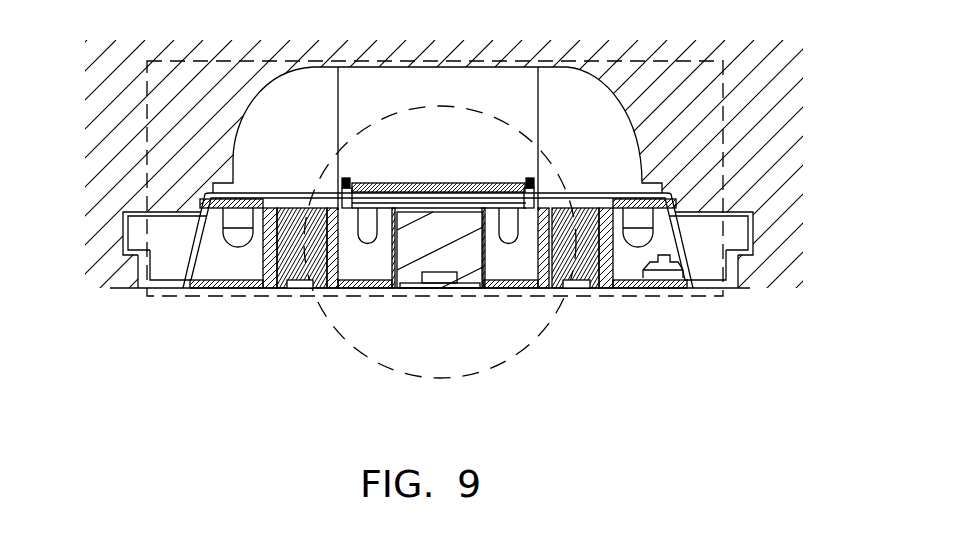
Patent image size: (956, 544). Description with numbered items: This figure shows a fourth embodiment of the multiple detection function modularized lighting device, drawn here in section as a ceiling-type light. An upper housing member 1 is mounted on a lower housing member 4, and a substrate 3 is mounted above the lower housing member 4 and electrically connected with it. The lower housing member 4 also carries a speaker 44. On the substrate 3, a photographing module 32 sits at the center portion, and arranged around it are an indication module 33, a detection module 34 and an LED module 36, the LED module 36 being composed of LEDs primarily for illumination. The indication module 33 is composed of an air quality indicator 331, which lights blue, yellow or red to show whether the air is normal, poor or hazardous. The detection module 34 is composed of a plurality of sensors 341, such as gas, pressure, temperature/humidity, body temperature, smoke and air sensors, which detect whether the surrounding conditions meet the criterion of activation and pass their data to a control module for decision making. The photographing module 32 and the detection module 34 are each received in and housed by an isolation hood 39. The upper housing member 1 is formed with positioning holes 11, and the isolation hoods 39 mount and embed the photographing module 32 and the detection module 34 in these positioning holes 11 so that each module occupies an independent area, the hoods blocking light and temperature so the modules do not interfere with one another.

The upper housing member 1 is at (734, 291).
The substrate 3 is at (278, 205).
The lower housing member 4 is at (678, 205).
The positioning hole 11 is at (323, 292).
The photographing module 32 is at (410, 285).
The indication module 33 is at (515, 285).
The detection module 34 is at (283, 289).
The LED module 36 is at (222, 212).
The isolation hood 39 is at (607, 288).
The speaker 44 is at (668, 288).
The air quality indicator 331 is at (505, 283).
The sensors 341 is at (277, 290).